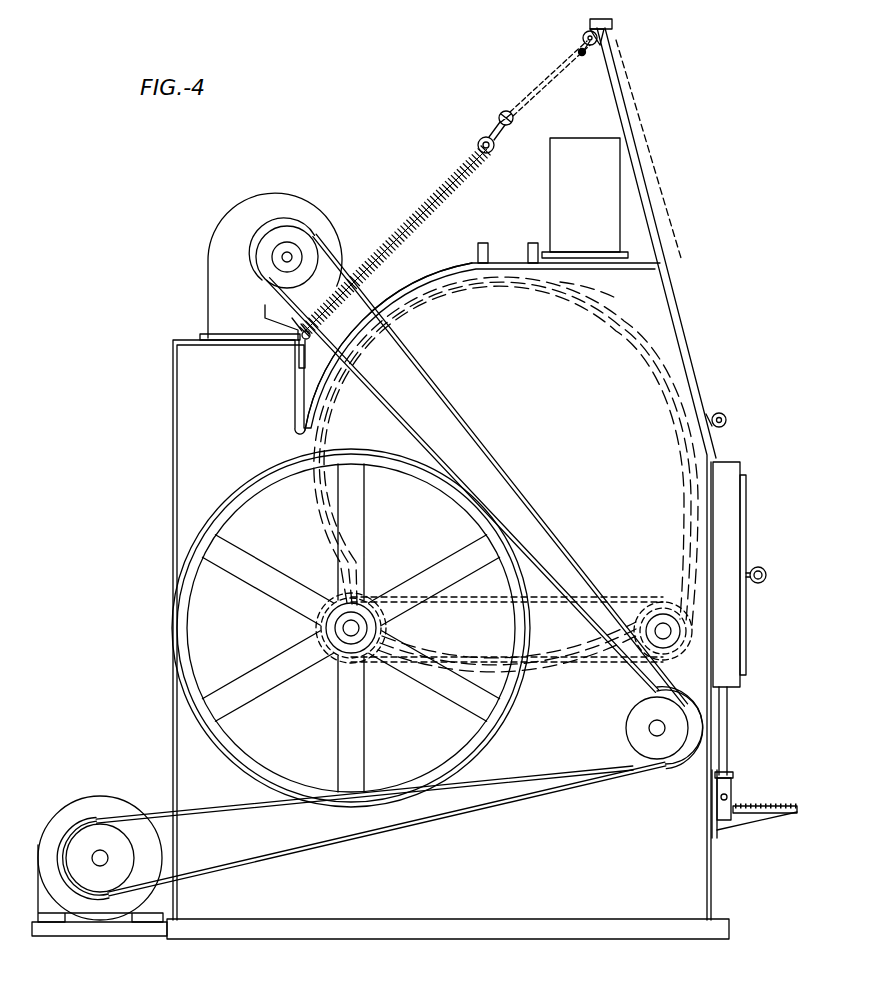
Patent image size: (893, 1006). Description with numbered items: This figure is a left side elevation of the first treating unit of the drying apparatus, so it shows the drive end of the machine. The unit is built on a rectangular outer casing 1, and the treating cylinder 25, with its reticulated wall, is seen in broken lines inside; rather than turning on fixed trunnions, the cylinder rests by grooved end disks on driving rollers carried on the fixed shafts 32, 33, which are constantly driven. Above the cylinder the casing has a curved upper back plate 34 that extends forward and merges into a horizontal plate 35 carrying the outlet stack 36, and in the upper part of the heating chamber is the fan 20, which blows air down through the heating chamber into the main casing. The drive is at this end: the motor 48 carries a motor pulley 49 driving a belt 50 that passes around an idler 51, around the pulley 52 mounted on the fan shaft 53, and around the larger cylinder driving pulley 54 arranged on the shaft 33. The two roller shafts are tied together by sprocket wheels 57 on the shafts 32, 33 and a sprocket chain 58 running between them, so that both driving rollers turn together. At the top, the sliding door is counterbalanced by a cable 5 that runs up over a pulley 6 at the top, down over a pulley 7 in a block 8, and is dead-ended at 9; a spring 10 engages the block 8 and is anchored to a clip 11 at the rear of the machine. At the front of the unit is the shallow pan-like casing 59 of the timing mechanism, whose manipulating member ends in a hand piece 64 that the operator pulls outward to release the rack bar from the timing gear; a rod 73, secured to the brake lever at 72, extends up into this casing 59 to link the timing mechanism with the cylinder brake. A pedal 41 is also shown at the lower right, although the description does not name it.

The outer casing 1 is at (700, 905).
The cable 5 is at (670, 230).
The pulley 6 is at (585, 33).
The pulley 7 is at (505, 111).
The block 8 is at (498, 122).
The dead-end 9 is at (582, 56).
The spring 10 is at (395, 240).
The clip 11 is at (300, 333).
The fan 20 is at (254, 236).
The cylinder 25 is at (667, 383).
The fixed shaft 32 is at (663, 628).
The fixed shaft 33 is at (351, 628).
The curved upper back plate 34 is at (427, 272).
The horizontal plate 35 is at (603, 264).
The outlet stack 36 is at (575, 182).
The pedal 41 is at (793, 785).
The motor 48 is at (112, 910).
The motor pulley 49 is at (90, 842).
The belt 50 is at (307, 847).
The idler 51 is at (642, 740).
The fan shaft pulley 52 is at (282, 237).
The fan shaft 53 is at (290, 247).
The cylinder driving pulley 54 is at (223, 502).
The sprocket wheel 57 is at (318, 654).
The sprocket chain 58 is at (557, 597).
The timing mechanism casing 59 is at (723, 498).
The hand piece 64 is at (785, 553).
The rod attachment point 72 is at (725, 802).
The rod 73 is at (725, 710).